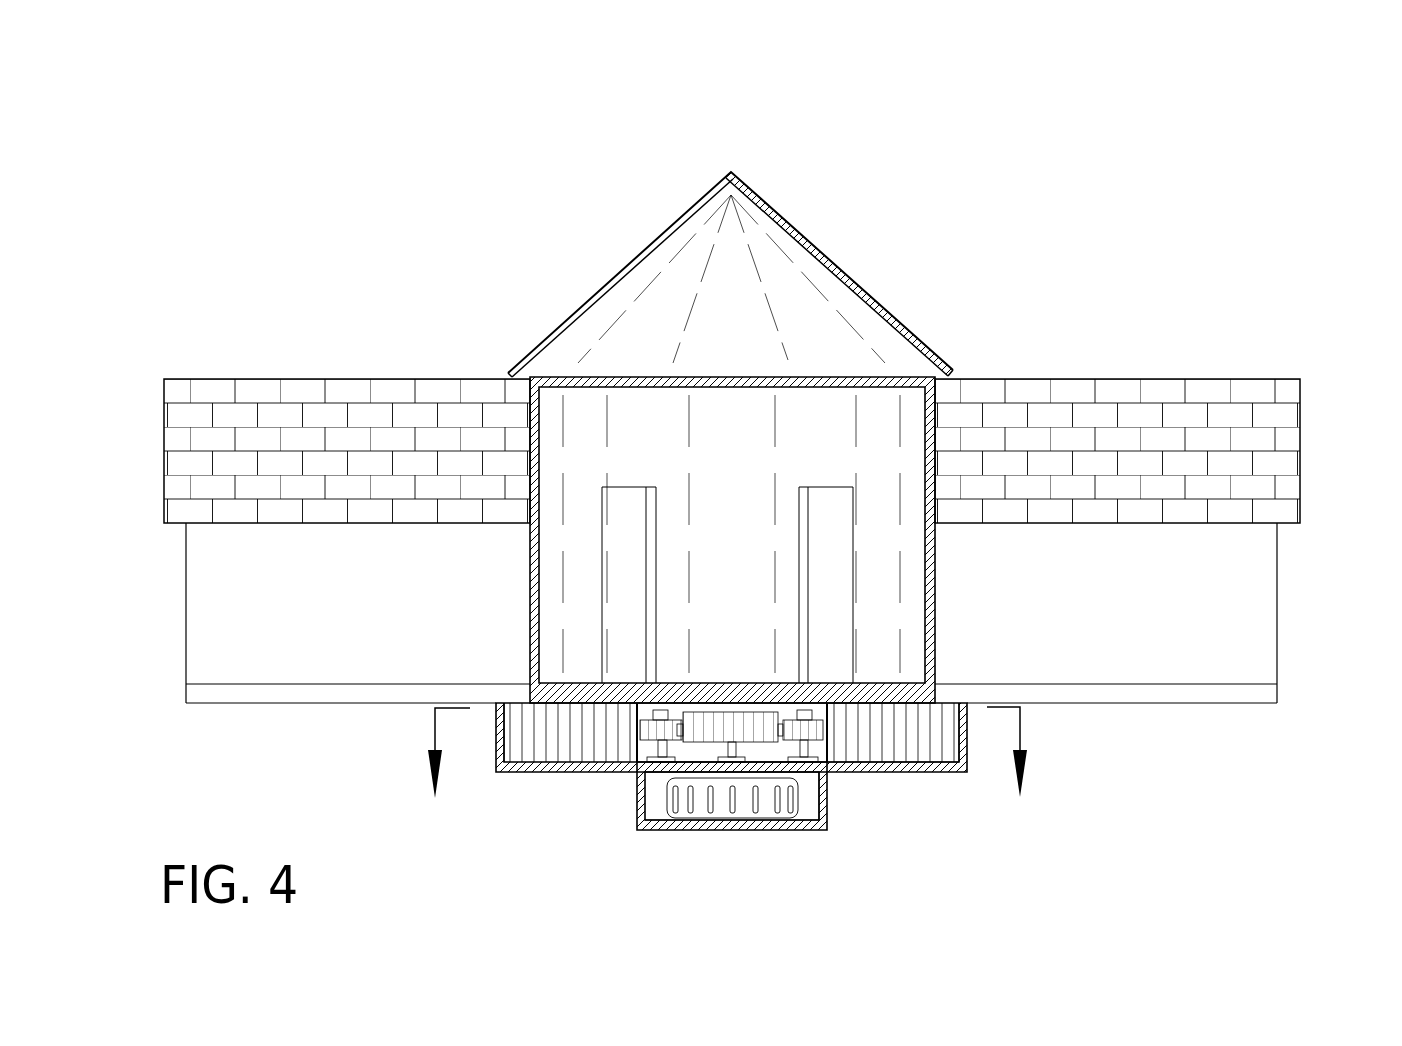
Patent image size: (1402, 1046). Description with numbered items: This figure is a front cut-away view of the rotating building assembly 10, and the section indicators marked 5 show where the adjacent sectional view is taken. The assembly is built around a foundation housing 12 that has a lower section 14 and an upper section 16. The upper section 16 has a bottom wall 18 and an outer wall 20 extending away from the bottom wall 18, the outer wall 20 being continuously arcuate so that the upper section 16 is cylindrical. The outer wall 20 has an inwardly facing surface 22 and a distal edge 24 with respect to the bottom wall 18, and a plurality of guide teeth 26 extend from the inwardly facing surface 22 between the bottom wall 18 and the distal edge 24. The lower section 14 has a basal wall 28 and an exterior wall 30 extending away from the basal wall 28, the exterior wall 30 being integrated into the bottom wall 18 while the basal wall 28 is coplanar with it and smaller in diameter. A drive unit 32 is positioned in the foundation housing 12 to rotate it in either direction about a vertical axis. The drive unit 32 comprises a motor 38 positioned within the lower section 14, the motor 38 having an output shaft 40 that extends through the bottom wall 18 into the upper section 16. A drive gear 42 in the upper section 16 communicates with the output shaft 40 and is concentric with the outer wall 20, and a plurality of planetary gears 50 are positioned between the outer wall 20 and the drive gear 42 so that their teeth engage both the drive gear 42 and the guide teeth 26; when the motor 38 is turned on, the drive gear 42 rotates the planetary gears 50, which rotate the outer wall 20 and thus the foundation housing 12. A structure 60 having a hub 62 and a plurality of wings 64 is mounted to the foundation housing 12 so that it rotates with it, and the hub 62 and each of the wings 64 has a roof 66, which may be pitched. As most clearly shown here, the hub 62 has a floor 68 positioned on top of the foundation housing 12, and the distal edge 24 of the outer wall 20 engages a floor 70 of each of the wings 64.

The rotating building assembly 10 is at (438, 139).
The structure 60 is at (604, 183).
The floor 68 is at (745, 690).
The drive unit 32 is at (738, 712).
The hub 62 is at (935, 572).
The roof 66 is at (313, 400).
The wings 64 is at (187, 607).
The floor 70 is at (260, 683).
The planetary gears 50 is at (652, 725).
The drive gear 42 is at (703, 717).
The outer wall 20 is at (968, 733).
The distal edge 24 is at (500, 703).
The foundation housing 12 is at (493, 782).
The inwardly facing surface 22 is at (507, 732).
The guide teeth 26 is at (598, 737).
The motor 38 is at (680, 810).
The output shaft 40 is at (730, 747).
The basal wall 28 is at (768, 830).
The lower section 14 is at (832, 842).
The exterior wall 30 is at (827, 798).
The bottom wall 18 is at (918, 773).
The upper section 16 is at (972, 784).
The section line 5 is at (724, 774).